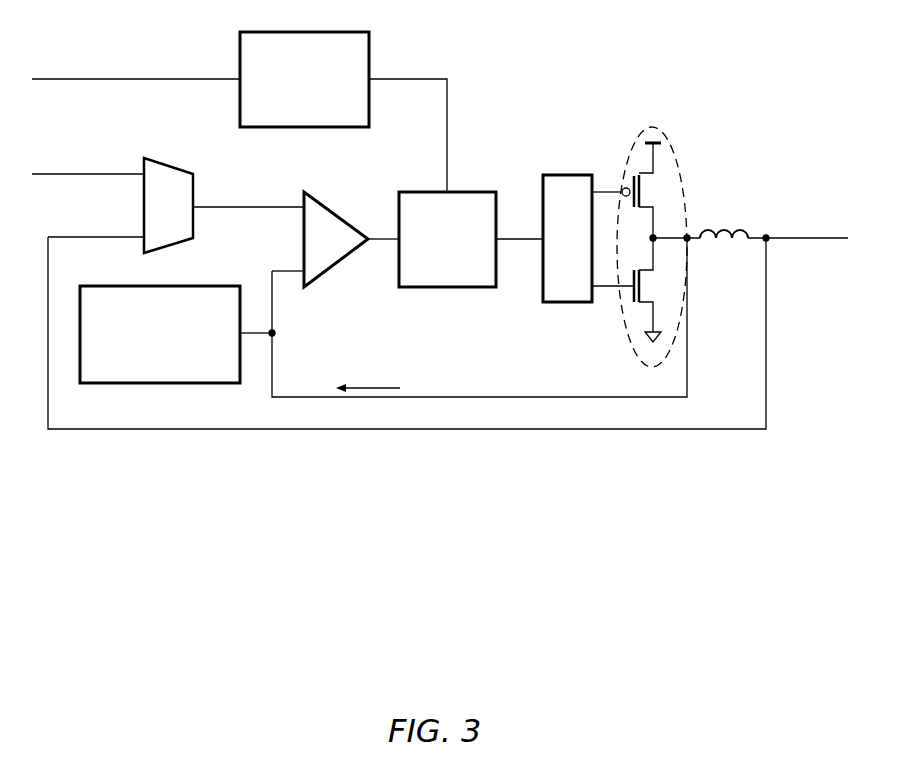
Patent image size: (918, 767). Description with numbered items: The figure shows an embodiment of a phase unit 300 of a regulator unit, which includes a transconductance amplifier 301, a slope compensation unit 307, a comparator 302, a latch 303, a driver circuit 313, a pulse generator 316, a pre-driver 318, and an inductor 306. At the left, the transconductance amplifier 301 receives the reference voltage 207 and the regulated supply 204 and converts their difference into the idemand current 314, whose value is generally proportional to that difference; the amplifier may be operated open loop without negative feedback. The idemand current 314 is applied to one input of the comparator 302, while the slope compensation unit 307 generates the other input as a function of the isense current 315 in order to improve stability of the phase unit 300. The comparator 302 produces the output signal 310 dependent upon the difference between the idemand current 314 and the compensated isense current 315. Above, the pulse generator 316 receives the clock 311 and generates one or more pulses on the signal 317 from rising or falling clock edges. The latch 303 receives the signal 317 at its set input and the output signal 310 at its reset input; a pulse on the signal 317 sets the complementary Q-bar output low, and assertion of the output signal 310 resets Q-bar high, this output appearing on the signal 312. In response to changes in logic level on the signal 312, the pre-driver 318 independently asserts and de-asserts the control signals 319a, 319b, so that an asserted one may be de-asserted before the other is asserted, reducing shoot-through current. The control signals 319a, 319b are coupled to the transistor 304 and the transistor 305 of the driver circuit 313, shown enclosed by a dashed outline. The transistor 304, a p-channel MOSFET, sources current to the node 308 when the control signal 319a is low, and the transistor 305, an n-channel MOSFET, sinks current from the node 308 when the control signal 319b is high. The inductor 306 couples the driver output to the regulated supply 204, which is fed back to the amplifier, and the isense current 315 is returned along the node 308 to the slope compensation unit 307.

The phase unit 300 is at (640, 108).
The transconductance amplifier 301 is at (169, 159).
The comparator 302 is at (336, 206).
The latch 303 is at (447, 290).
The transistor 304 is at (656, 183).
The transistor 305 is at (656, 292).
The inductor 306 is at (724, 231).
The slope compensation unit 307 is at (196, 385).
The node 308 is at (521, 397).
The output signal 310 is at (375, 243).
The clock 311 is at (136, 77).
The signal 312 is at (512, 243).
The driver circuit 313 is at (666, 128).
The idemand current 314 is at (262, 218).
The isense current 315 is at (385, 374).
The pulse generator 316 is at (288, 110).
The signal 317 is at (432, 78).
The pre-driver 318 is at (567, 238).
The control signal 319a is at (607, 190).
The control signal 319b is at (607, 290).
The reference voltage 207 is at (88, 172).
The regulated supply 204 is at (805, 225).